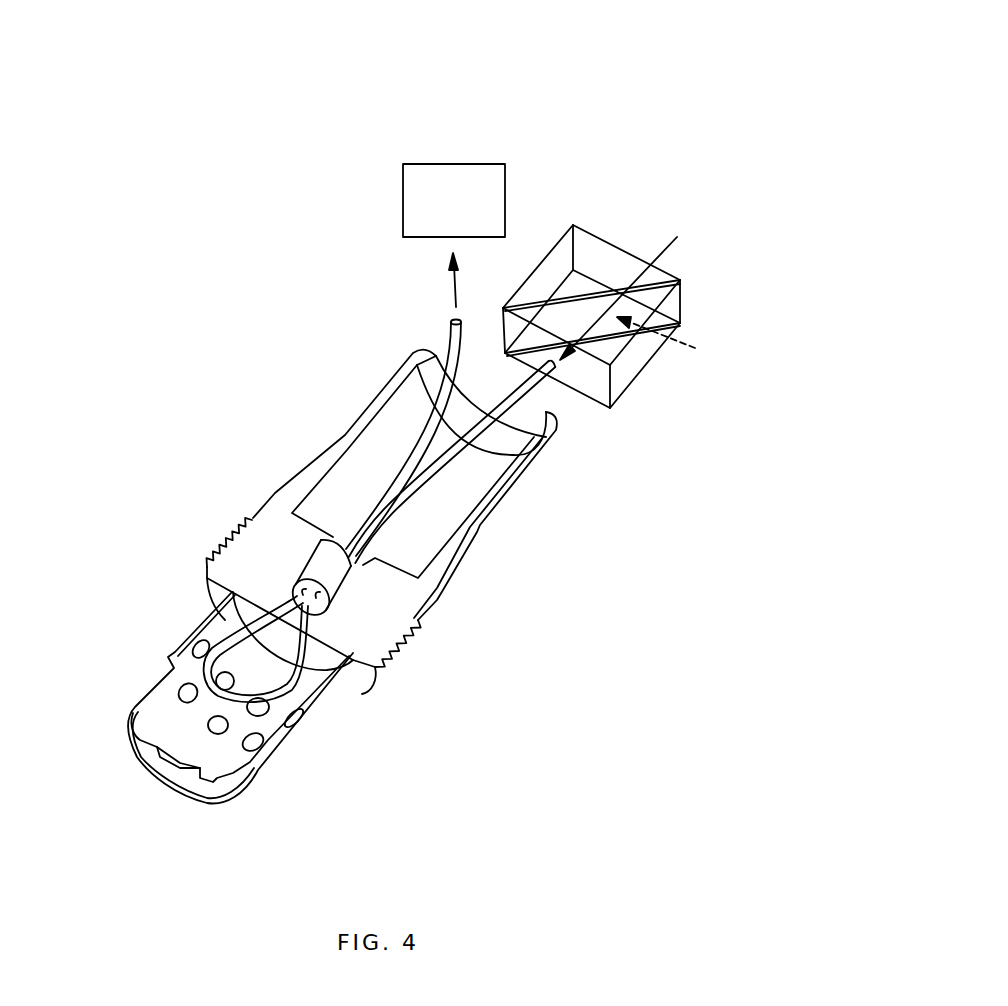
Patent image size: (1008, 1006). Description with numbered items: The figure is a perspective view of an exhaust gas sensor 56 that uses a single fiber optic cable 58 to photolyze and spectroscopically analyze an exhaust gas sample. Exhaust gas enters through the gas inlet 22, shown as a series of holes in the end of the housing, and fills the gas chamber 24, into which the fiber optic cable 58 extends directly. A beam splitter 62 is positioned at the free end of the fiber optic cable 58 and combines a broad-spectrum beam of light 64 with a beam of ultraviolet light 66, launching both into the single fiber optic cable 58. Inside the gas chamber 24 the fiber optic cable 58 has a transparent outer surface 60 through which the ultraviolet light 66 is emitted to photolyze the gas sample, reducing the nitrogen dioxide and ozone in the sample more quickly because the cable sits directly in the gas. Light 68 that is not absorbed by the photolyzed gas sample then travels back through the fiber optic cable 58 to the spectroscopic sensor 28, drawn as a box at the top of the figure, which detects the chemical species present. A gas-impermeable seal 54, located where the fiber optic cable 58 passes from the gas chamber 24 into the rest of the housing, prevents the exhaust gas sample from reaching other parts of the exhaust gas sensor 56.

The gas inlet 22 is at (175, 663).
The gas chamber 24 is at (225, 620).
The spectroscopic sensor 28 is at (433, 163).
The gas-impermeable seal 54 is at (308, 568).
The exhaust gas sensor 56 is at (603, 95).
The single fiber optic cable 58 is at (533, 387).
The transparent outer surface 60 is at (283, 693).
The beam splitter 62 is at (627, 315).
The broad-spectrum beam of light 64 is at (631, 291).
The beam of ultraviolet light 66 is at (669, 342).
The light unabsorbed by the photolyzed gas sample 68 is at (450, 287).